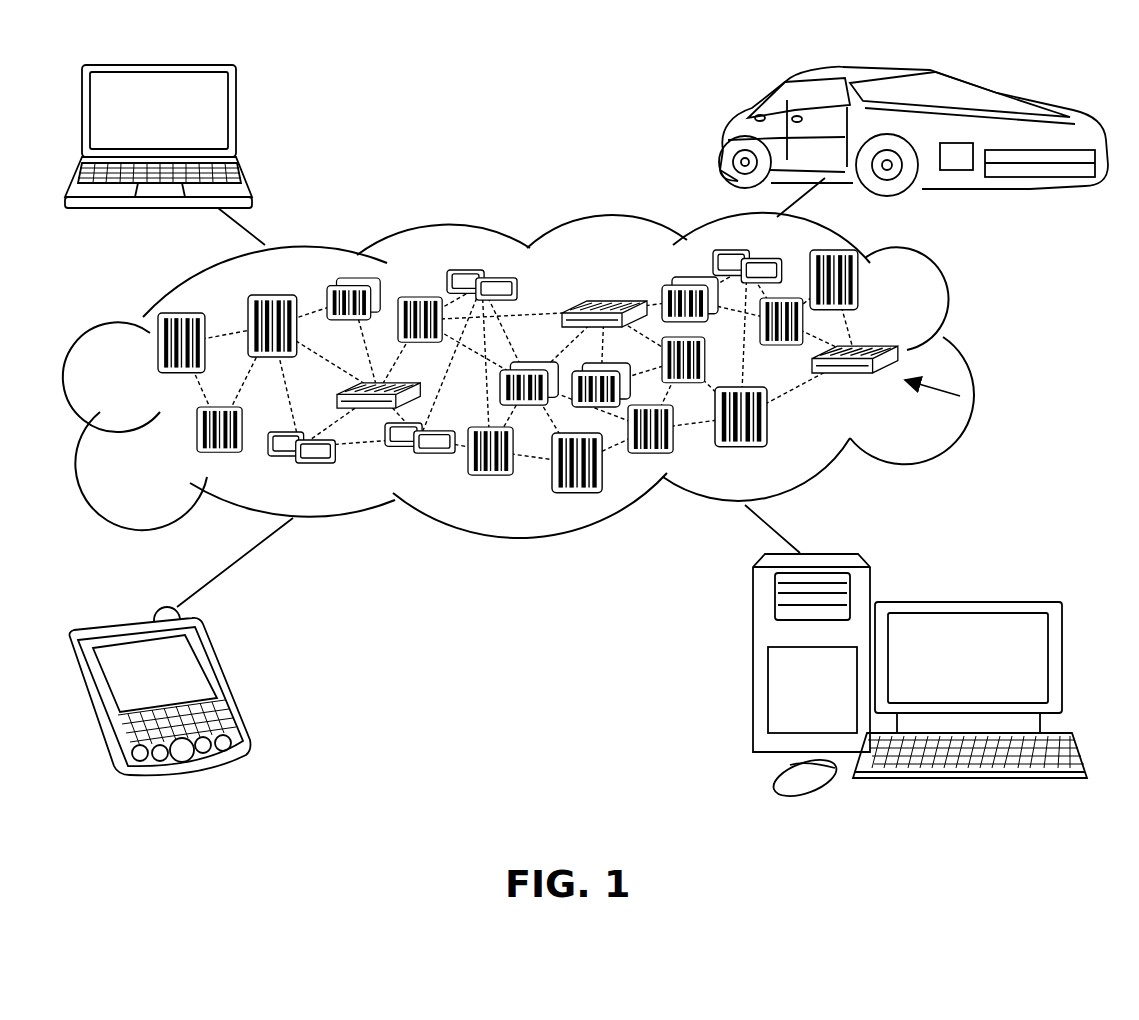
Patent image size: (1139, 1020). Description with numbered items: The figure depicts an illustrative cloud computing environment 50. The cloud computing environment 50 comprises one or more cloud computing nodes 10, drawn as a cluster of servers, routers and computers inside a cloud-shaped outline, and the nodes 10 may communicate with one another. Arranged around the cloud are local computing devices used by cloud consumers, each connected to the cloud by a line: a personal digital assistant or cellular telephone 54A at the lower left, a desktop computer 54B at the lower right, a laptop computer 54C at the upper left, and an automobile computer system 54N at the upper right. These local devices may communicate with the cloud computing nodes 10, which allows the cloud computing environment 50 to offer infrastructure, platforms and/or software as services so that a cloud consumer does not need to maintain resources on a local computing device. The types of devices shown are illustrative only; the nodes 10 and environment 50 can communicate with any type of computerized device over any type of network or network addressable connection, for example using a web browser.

The cloud computing nodes 10 is at (958, 401).
The cloud computing environment 50 is at (974, 353).
The personal digital assistant (PDA) or cellular telephone 54A is at (223, 688).
The desktop computer 54B is at (962, 602).
The laptop computer 54C is at (237, 120).
The automobile computer system 54N is at (723, 131).